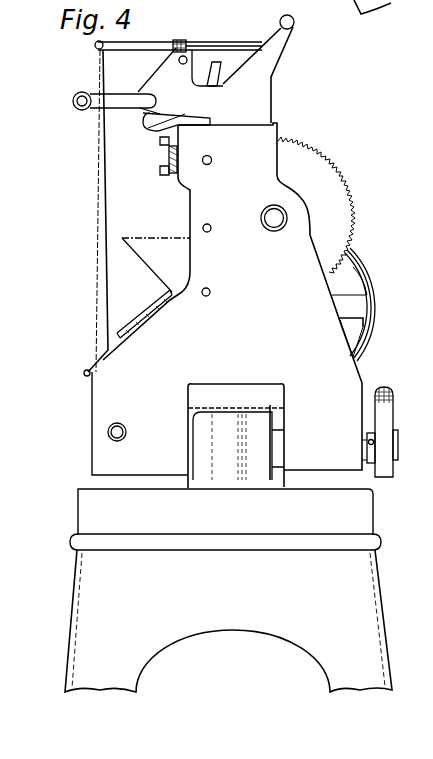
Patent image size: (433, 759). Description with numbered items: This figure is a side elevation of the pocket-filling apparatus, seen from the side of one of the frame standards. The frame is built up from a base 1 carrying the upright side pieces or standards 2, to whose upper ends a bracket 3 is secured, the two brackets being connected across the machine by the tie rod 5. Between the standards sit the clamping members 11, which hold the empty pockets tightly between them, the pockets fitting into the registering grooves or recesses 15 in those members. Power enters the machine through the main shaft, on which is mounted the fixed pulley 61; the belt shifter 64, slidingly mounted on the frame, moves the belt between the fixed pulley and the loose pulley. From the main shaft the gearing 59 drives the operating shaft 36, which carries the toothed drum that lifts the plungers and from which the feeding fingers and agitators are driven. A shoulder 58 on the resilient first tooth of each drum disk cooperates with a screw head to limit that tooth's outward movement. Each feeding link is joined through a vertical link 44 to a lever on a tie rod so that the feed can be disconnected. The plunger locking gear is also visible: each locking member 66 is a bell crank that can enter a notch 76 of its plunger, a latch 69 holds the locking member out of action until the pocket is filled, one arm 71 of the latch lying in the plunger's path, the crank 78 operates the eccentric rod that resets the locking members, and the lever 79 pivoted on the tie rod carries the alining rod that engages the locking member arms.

The base 1 is at (236, 452).
The side piece or standard 2 is at (236, 299).
The bracket 3 is at (262, 75).
The tie rod 5 is at (298, 26).
The clamping member 11 is at (392, 508).
The groove or recess 15 is at (176, 41).
The operating shaft 36 is at (271, 224).
The vertical link 44 is at (85, 213).
The shoulder 58 is at (144, 287).
The gearing 59 is at (355, 213).
The fixed pulley 61 is at (366, 304).
The belt shifter 64 is at (163, 170).
The locking member 66 is at (219, 68).
The latch 69 is at (222, 46).
The arm 71 is at (392, 432).
The notch 76 is at (159, 240).
The crank 78 is at (124, 81).
The lever 79 is at (167, 139).